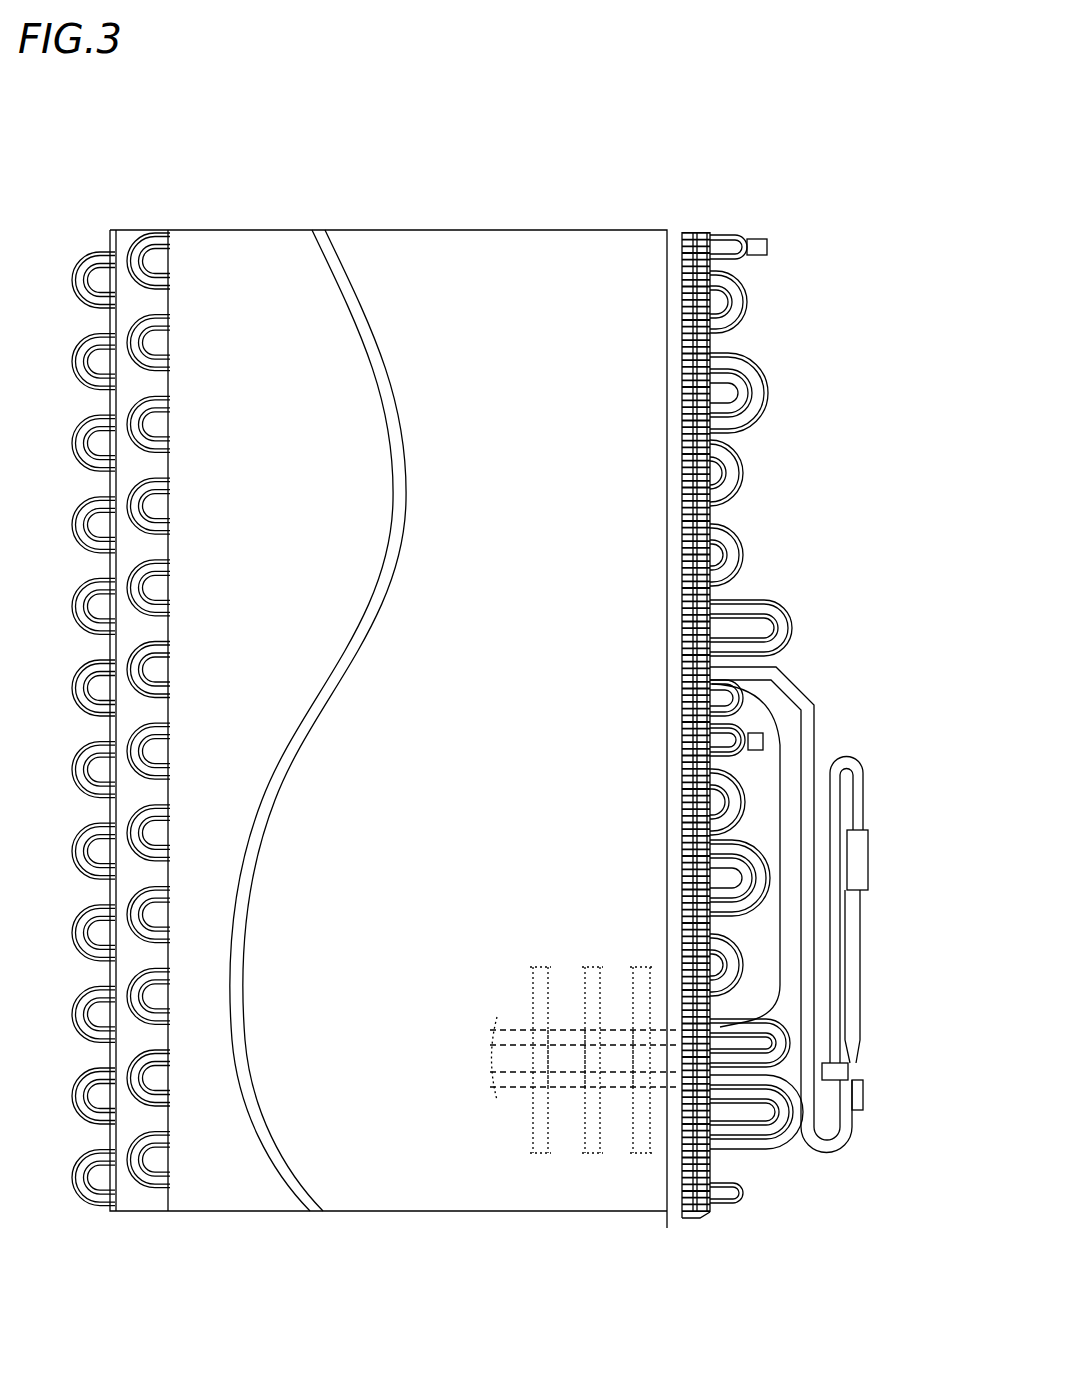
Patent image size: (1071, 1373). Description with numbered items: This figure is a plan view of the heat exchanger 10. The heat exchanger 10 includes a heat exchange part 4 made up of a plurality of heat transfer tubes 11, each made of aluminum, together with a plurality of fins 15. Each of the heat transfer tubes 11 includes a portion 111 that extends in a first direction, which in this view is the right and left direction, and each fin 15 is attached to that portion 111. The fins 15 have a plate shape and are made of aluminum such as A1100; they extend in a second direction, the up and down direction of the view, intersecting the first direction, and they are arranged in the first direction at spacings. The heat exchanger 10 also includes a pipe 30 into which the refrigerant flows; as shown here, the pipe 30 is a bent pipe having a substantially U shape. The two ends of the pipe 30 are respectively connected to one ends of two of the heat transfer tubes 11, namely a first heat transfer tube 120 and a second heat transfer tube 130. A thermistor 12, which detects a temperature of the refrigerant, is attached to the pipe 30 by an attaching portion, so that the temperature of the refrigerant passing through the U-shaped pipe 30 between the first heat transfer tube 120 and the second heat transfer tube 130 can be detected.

The heat exchanger 10 is at (712, 147).
The heat exchange part 4 is at (490, 228).
The heat transfer tubes 11 is at (572, 1105).
The thermistor 12 is at (790, 1040).
The fins 15 is at (567, 967).
The pipe 30 is at (767, 1037).
The portion 111 is at (618, 1020).
The first heat transfer tube 120 is at (513, 1017).
The second heat transfer tube 130 is at (513, 1100).